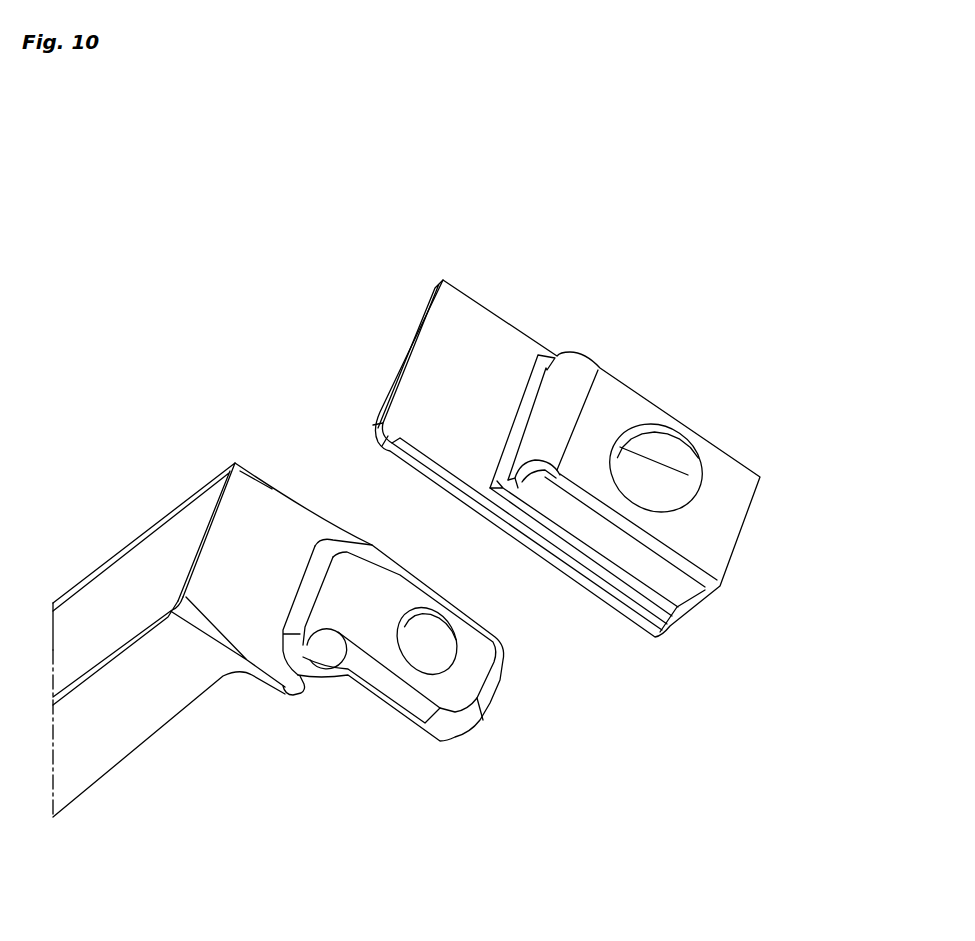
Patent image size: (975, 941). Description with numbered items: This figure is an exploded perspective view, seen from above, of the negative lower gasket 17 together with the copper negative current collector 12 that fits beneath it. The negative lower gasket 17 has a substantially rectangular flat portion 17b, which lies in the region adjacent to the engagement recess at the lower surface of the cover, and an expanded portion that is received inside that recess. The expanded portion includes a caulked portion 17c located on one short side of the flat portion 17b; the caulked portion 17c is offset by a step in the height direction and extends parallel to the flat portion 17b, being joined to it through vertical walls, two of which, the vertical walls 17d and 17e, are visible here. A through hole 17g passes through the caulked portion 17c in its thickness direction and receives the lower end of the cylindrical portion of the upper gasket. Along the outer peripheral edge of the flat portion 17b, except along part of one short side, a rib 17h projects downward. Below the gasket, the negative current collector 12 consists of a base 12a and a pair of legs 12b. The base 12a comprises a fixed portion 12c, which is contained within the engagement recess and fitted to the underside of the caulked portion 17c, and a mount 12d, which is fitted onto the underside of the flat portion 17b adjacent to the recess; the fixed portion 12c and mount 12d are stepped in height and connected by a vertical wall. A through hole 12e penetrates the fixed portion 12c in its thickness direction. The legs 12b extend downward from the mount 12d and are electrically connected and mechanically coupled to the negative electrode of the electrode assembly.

The negative current collector 12 is at (262, 456).
The base 12a is at (405, 699).
The legs (connectors) 12b is at (135, 580).
The fixed portion 12c is at (385, 690).
The mount 12d is at (289, 697).
The through hole 12e is at (452, 660).
The negative lower gasket 17 is at (679, 243).
The flat portion 17b is at (473, 313).
The caulked portion 17c is at (713, 553).
The vertical wall 17d is at (553, 358).
The vertical wall 17e is at (680, 583).
The through hole 17g is at (698, 508).
The rib 17h is at (622, 611).